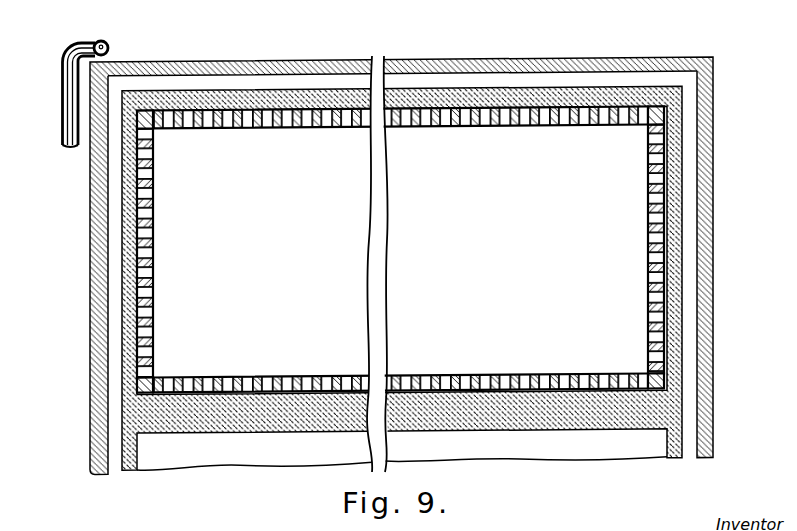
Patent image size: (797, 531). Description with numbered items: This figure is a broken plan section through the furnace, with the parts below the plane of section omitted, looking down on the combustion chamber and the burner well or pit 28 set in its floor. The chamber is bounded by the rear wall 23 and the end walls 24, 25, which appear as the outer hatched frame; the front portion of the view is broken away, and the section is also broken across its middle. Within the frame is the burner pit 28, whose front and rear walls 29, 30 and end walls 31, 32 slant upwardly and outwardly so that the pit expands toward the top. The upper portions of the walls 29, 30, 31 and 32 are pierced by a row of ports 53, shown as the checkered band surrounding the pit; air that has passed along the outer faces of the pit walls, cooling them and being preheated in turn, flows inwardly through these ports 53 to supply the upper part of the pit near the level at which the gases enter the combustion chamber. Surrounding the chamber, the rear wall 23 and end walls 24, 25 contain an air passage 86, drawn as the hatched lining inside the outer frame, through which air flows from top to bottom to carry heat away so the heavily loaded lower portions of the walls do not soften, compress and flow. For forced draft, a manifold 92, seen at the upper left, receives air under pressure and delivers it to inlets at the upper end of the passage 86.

The rear wall 23 is at (413, 63).
The end wall 24 is at (98, 253).
The end wall 25 is at (712, 252).
The burner well or pit 28 is at (399, 264).
The front wall of burner pit 29 is at (445, 376).
The rear wall of burner pit 30 is at (463, 127).
The end wall of burner pit 31 is at (154, 252).
The end wall of burner pit 32 is at (648, 265).
The ports 53 is at (645, 154).
The air passage 86 is at (237, 86).
The manifold 92 is at (65, 108).